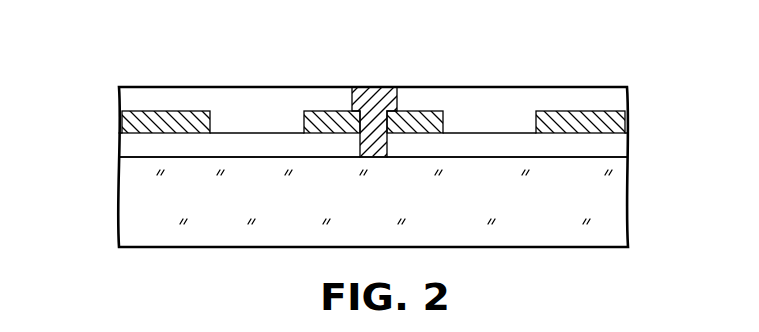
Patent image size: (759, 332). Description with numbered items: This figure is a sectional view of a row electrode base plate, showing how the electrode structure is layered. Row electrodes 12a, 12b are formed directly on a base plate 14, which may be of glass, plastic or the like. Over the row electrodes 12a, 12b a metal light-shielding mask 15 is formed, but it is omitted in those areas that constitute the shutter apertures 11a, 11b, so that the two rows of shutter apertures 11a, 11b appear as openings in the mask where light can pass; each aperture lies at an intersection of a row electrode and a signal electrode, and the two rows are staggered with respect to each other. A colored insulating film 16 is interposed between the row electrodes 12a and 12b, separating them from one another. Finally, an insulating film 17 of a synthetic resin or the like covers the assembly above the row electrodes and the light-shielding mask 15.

The shutter aperture 11a is at (273, 97).
The shutter aperture 11b is at (470, 95).
The row electrode 12a is at (235, 145).
The row electrode 12b is at (498, 138).
The base plate 14 is at (618, 198).
The metal light-shielding mask 15 is at (123, 125).
The colored insulating film 16 is at (372, 90).
The insulating film 17 is at (618, 98).